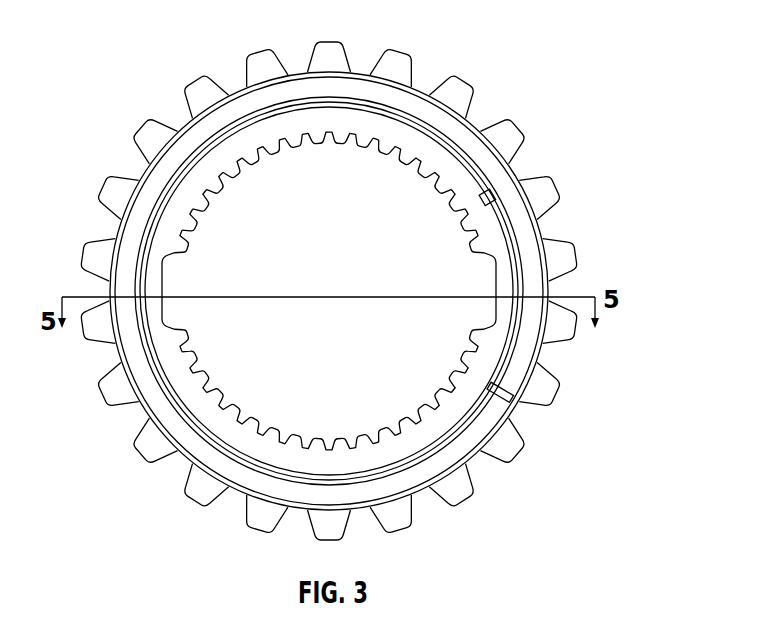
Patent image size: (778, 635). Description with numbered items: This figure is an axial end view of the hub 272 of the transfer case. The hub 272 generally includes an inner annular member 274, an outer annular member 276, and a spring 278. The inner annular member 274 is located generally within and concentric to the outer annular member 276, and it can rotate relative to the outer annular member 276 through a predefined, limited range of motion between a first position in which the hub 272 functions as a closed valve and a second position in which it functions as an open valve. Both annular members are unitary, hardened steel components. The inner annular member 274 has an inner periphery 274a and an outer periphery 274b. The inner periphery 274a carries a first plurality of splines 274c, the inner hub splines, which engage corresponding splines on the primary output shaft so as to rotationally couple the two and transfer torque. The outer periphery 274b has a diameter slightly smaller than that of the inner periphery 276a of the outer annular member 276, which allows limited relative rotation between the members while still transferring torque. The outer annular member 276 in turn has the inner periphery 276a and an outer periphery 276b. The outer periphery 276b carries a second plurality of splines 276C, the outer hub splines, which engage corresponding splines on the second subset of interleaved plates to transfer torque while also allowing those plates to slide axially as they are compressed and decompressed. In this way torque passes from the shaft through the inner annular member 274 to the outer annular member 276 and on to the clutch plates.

The hub 272 is at (634, 94).
The inner annular member 274 is at (395, 133).
The outer annular member 276 is at (455, 133).
The spring 278 is at (493, 176).
The second plurality of splines 276C is at (556, 262).
The inner periphery of the outer annular member 276a is at (523, 325).
The outer periphery of the outer annular member 276b is at (543, 337).
The inner periphery of the inner annular member 274a is at (436, 412).
The outer periphery of the inner annular member 274b is at (512, 363).
The first plurality of splines 274c is at (385, 437).